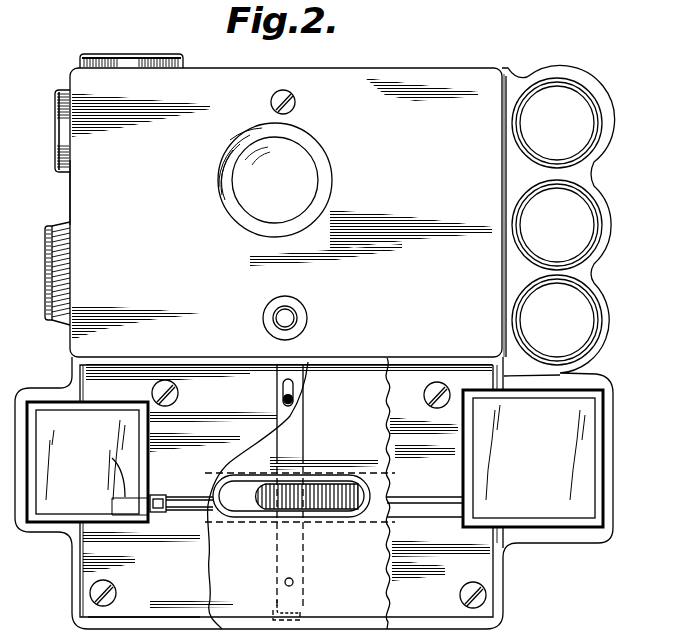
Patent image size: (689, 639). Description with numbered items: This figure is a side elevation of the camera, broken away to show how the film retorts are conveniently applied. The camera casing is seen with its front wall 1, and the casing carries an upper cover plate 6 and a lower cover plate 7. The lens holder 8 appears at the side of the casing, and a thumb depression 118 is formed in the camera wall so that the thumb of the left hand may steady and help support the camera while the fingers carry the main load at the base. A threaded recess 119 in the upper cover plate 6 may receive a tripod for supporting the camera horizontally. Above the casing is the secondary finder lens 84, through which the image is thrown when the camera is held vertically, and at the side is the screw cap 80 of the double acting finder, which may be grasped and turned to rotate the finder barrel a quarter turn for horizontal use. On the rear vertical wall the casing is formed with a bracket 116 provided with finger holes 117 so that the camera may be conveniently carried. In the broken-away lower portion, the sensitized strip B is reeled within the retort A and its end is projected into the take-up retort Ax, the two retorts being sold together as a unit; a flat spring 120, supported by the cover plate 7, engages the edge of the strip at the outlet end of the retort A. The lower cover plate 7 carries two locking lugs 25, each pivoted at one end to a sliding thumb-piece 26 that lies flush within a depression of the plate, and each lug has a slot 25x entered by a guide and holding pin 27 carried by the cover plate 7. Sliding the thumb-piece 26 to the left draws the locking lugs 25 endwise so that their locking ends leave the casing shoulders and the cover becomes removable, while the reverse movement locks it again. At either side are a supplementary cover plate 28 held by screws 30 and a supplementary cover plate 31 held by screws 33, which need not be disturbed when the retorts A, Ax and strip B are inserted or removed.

The front wall 1 is at (70, 188).
The upper cover plate 6 is at (288, 212).
The lower cover plate 7 is at (314, 493).
The lens holder 8 is at (45, 253).
The locking lugs 25 is at (278, 412).
The slot 25x is at (314, 592).
The sliding thumb-piece 26 is at (330, 488).
The guide and holding pin 27 is at (293, 400).
The supplementary cover plate 28 is at (144, 596).
The screws 30 is at (112, 596).
The supplementary cover plate 31 is at (272, 489).
The screws 33 is at (152, 393).
The screw cap 80 is at (56, 104).
The secondary finder lens 84 is at (128, 57).
The bracket 116 is at (603, 148).
The finger holes 117 is at (588, 120).
The thumb depression 118 is at (310, 168).
The threaded recess 119 is at (297, 318).
The flat spring 120 is at (100, 469).
The retort A is at (87, 462).
The take-up retort Ax is at (533, 458).
The sensitized strip B is at (424, 498).